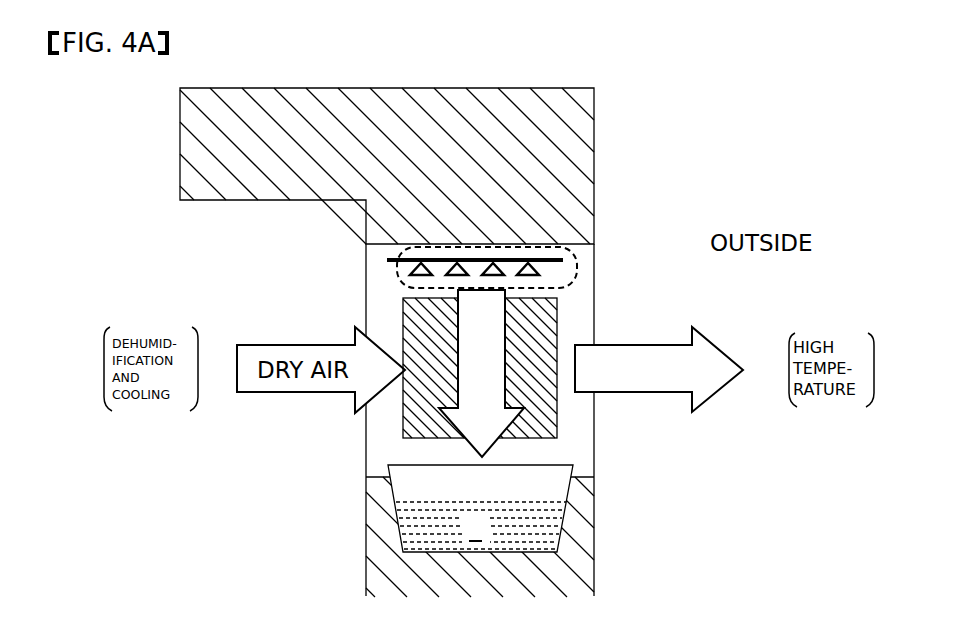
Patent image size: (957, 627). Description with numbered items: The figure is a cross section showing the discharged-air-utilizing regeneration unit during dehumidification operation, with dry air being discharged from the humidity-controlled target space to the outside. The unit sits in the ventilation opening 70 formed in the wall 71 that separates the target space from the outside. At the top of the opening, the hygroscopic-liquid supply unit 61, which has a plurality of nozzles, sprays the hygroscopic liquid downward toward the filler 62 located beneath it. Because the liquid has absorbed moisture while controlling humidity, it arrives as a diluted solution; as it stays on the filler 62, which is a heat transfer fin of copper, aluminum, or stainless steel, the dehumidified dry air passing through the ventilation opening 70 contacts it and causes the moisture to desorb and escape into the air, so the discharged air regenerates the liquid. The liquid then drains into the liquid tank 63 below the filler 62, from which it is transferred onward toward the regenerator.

The ventilation opening 70 is at (366, 259).
The wall 71 is at (596, 163).
The hygroscopic-liquid supply unit 61 is at (578, 268).
The filler 62 is at (558, 305).
The liquid tank 63 is at (572, 465).